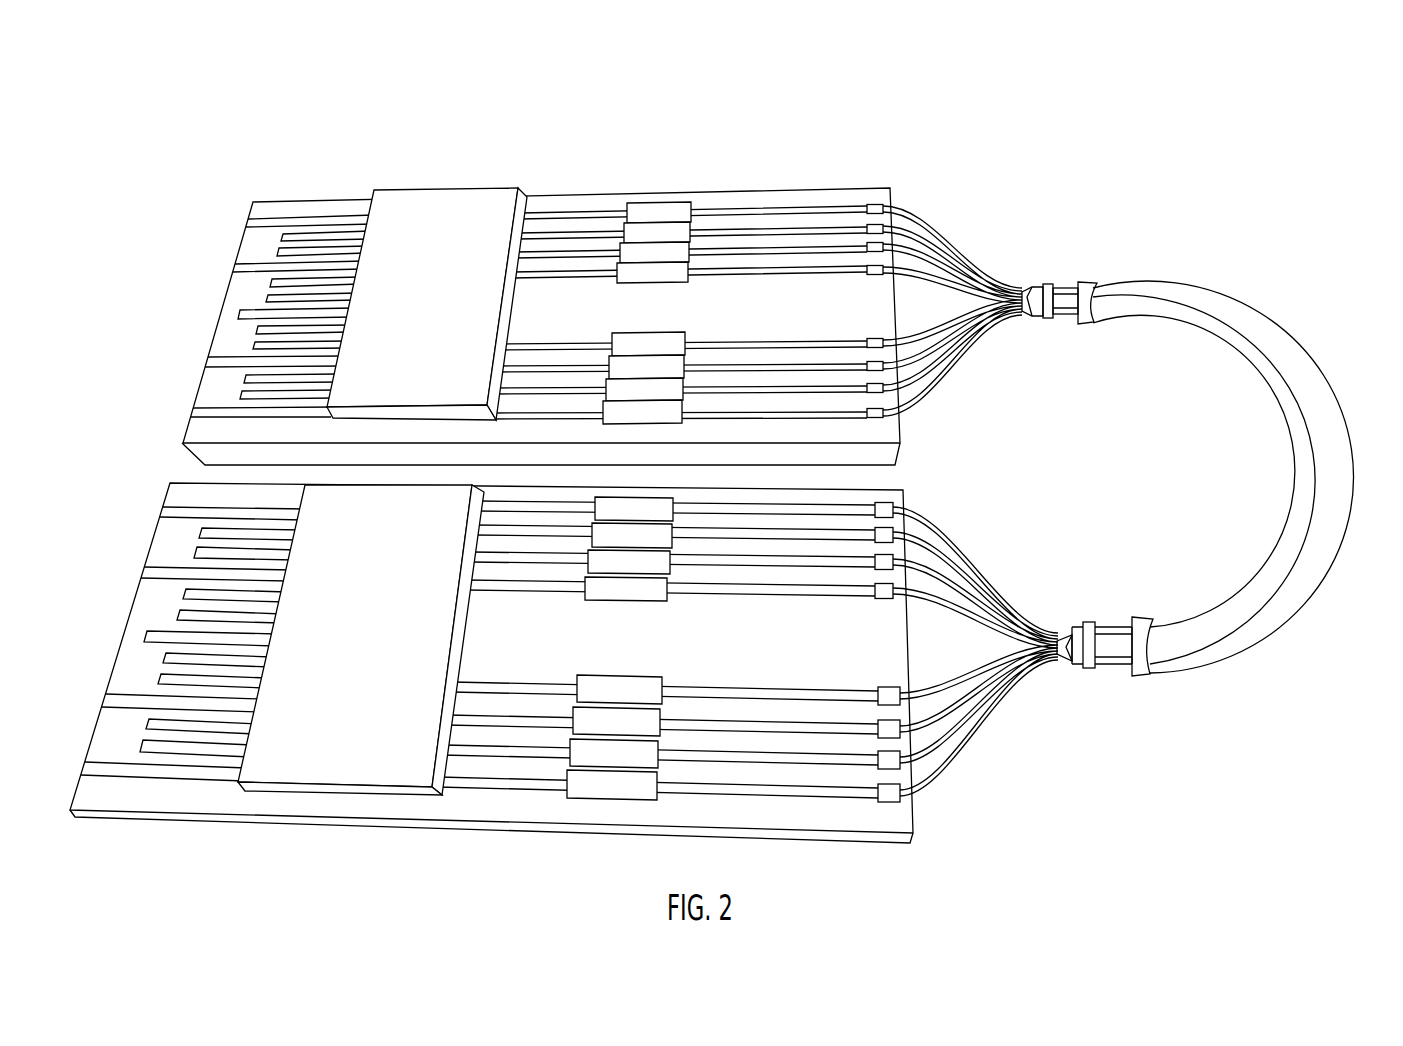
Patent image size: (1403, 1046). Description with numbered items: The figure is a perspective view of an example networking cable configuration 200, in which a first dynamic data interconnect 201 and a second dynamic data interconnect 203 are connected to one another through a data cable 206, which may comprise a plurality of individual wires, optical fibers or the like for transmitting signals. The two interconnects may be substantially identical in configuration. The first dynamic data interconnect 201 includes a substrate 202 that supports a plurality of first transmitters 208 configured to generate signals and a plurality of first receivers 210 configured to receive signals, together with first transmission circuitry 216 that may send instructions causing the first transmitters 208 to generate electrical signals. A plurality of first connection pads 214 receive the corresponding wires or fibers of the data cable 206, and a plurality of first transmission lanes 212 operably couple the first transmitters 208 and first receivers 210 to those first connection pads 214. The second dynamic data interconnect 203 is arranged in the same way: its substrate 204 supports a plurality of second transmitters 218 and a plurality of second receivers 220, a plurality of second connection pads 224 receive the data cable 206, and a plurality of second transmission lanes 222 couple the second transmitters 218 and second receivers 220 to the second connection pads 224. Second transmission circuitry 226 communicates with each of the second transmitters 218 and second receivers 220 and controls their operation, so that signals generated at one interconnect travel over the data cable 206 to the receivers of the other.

The networking cable configuration 200 is at (1331, 136).
The first dynamic data interconnect 201 is at (135, 242).
The substrate 202 is at (270, 200).
The second dynamic data interconnect 203 is at (130, 512).
The substrate 204 is at (112, 644).
The data cable 206 is at (1331, 397).
The first transmitters 208 is at (617, 263).
The first receivers 210 is at (602, 405).
The first transmission lanes 212 is at (784, 260).
The first connection pads 214 is at (865, 268).
The first transmission circuitry 216 is at (451, 211).
The second transmitters 218 is at (584, 577).
The second receivers 220 is at (564, 770).
The second transmission lanes 222 is at (727, 583).
The second connection pads 224 is at (877, 588).
The second transmission circuitry 226 is at (330, 779).